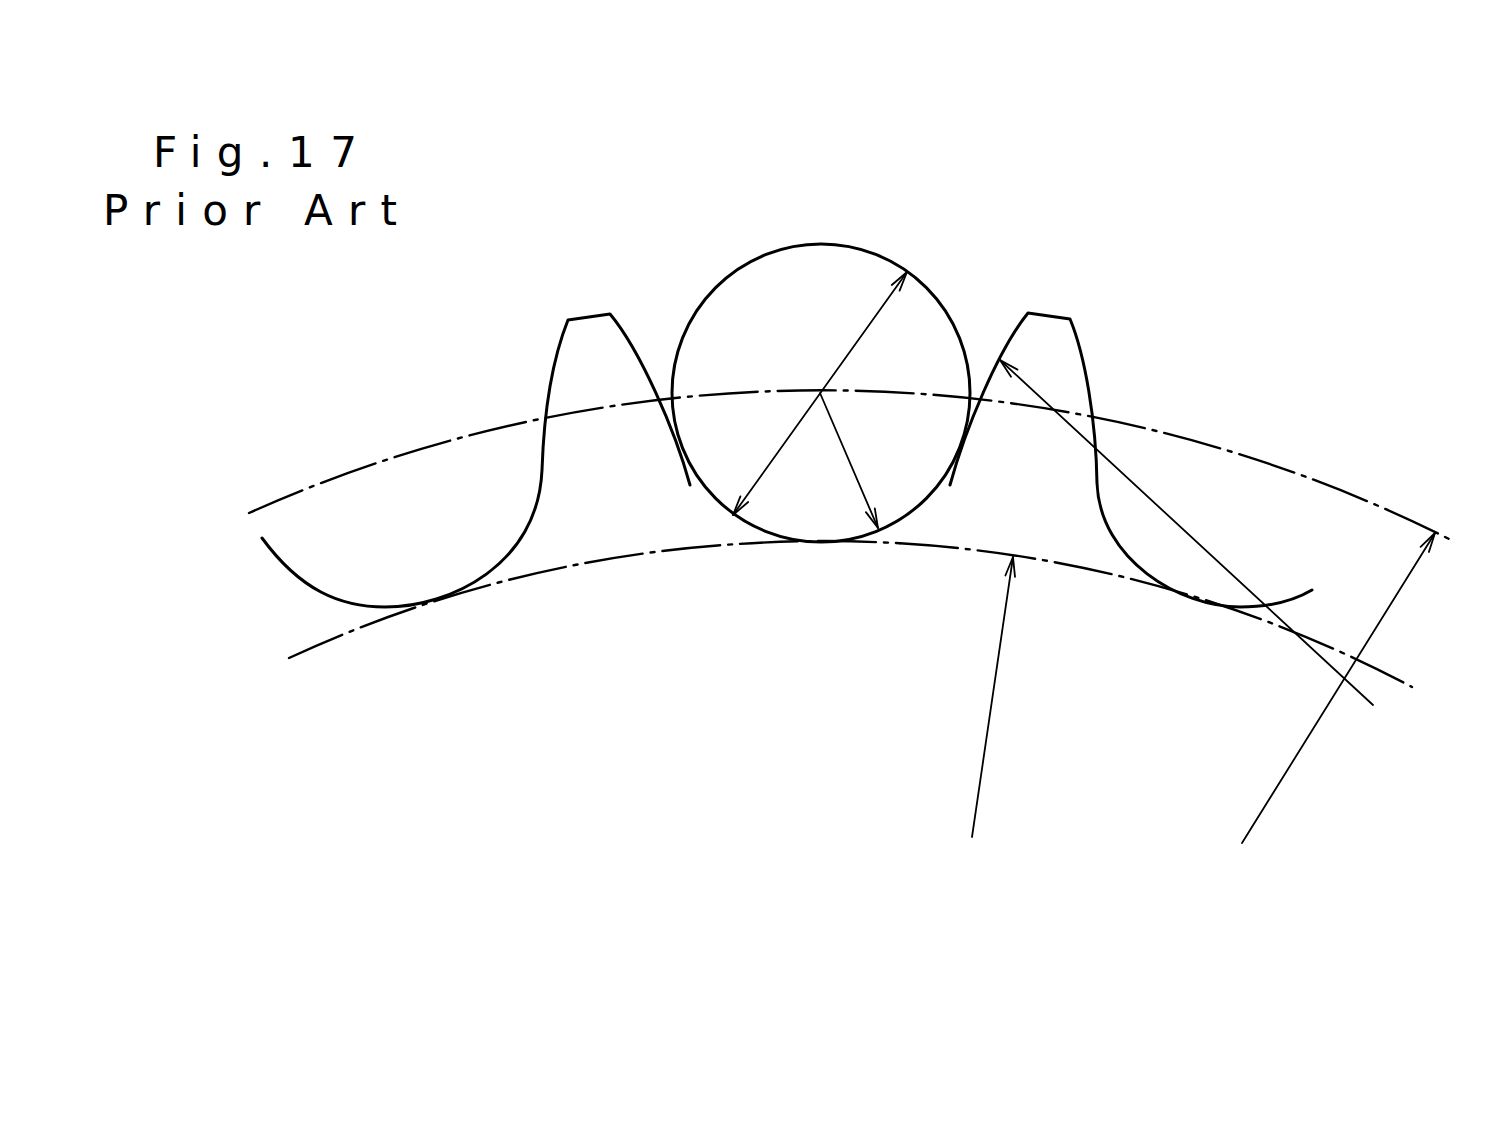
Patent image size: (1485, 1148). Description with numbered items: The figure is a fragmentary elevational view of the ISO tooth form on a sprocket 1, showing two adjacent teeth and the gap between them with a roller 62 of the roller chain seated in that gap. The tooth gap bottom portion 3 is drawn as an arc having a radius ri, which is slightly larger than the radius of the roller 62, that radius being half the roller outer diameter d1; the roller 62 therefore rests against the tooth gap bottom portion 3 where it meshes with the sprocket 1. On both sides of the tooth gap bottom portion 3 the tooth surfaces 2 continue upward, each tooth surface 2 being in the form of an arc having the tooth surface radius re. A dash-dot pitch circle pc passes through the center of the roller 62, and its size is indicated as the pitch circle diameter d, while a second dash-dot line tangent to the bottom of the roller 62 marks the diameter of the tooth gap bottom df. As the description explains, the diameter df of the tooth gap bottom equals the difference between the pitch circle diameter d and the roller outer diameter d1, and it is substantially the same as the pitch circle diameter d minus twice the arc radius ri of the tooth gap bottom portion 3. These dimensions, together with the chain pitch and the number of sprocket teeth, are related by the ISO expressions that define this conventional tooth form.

The sprocket 1 is at (852, 541).
The tooth surface 2 is at (615, 322).
The tooth gap bottom portion 3 is at (782, 542).
The roller 62 is at (772, 247).
The roller outer diameter d1 is at (850, 343).
The radius of the arc of the tooth gap bottom portion ri is at (848, 457).
The tooth surface radius re is at (1197, 542).
The pitch circle pc is at (1290, 470).
The pitch circle diameter d is at (1334, 704).
The diameter of the tooth gap bottom df is at (984, 712).